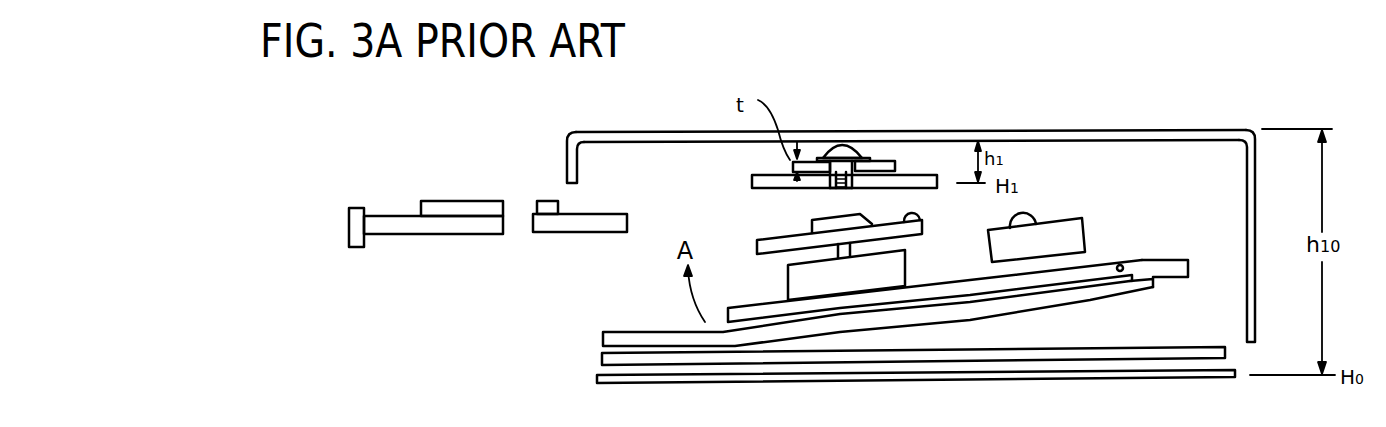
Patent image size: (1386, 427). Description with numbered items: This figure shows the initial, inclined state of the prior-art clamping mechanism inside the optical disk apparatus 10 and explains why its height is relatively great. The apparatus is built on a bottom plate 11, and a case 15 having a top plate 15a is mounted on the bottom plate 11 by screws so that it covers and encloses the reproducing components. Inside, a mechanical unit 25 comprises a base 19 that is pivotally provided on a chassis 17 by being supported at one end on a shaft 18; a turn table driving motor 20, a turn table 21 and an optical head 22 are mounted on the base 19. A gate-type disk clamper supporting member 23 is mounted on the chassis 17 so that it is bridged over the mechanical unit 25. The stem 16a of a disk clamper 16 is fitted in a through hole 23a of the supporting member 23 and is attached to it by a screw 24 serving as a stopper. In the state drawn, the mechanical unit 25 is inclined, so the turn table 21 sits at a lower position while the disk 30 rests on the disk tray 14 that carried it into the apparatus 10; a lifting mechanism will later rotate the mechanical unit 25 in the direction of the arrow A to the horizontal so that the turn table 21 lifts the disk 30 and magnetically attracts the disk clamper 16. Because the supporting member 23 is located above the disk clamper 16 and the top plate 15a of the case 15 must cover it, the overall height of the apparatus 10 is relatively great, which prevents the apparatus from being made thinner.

The optical disk apparatus 10 is at (1157, 62).
The bottom plate 11 is at (1215, 379).
The disk tray 14 is at (455, 234).
The case 15 is at (1240, 121).
The top plate 15a is at (1187, 130).
The disk clamper 16 is at (752, 181).
The stem 16a is at (830, 173).
The chassis 17 is at (1043, 298).
The shaft 18 is at (1130, 258).
The base 19 is at (948, 292).
The turn table driving motor 20 is at (862, 288).
The turn table 21 is at (918, 219).
The optical head 22 is at (1078, 216).
The disk clamper supporting member 23 is at (893, 160).
The through hole 23a is at (848, 158).
The screw 24 is at (836, 150).
The mechanical unit 25 is at (718, 322).
The disk 30 is at (455, 201).